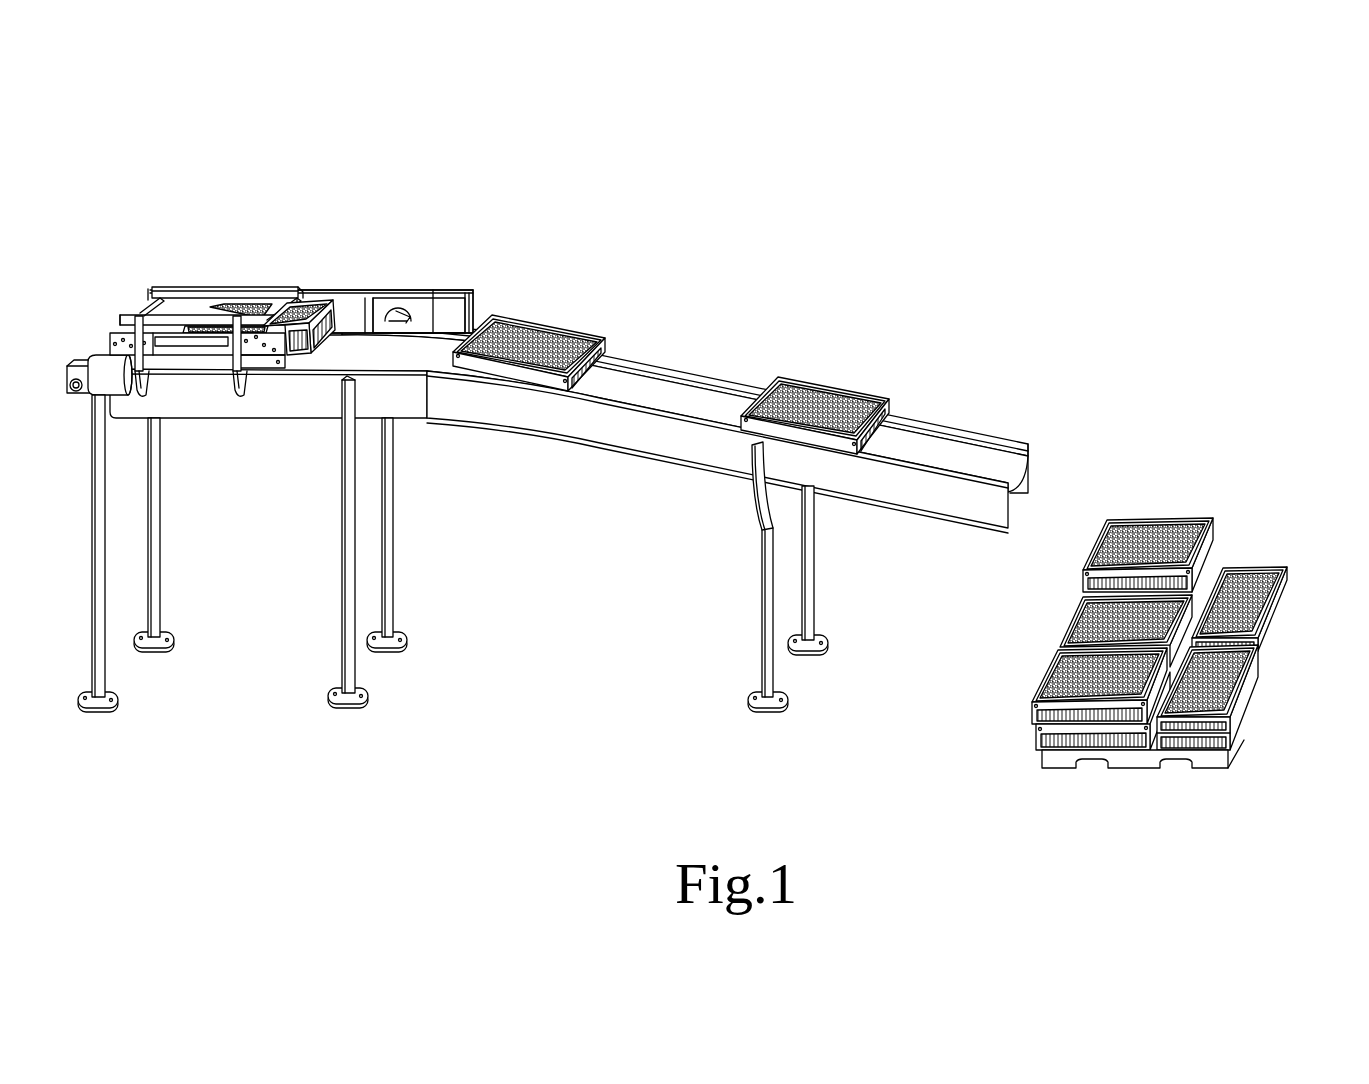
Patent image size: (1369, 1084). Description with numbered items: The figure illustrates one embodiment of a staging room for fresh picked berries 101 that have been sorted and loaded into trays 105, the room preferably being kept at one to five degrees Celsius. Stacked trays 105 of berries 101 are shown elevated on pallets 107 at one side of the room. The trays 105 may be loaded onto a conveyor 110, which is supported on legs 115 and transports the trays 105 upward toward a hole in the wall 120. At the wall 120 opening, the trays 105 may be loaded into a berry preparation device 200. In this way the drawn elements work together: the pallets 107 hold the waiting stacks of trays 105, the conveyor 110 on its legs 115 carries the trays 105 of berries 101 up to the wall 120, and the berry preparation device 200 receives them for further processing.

The fresh picked berries 101 is at (257, 310).
The trays 105 is at (1142, 513).
The pallets 107 is at (1042, 763).
The conveyor 110 is at (945, 422).
The legs 115 is at (353, 658).
The hole in the wall 120 is at (442, 292).
The berry preparation device 200 is at (357, 310).